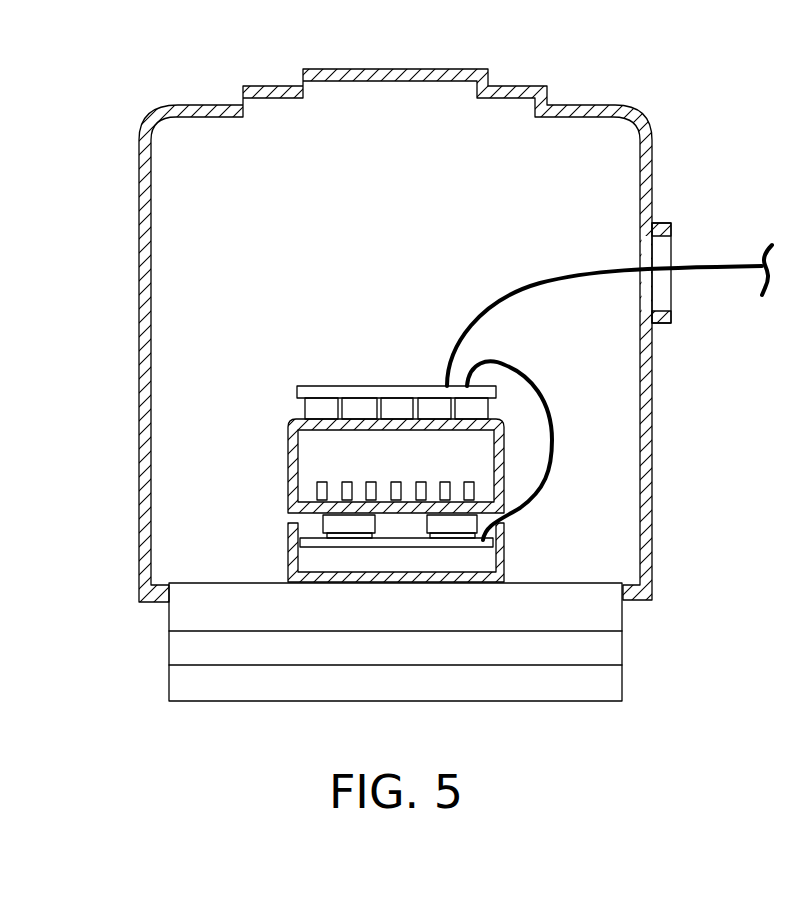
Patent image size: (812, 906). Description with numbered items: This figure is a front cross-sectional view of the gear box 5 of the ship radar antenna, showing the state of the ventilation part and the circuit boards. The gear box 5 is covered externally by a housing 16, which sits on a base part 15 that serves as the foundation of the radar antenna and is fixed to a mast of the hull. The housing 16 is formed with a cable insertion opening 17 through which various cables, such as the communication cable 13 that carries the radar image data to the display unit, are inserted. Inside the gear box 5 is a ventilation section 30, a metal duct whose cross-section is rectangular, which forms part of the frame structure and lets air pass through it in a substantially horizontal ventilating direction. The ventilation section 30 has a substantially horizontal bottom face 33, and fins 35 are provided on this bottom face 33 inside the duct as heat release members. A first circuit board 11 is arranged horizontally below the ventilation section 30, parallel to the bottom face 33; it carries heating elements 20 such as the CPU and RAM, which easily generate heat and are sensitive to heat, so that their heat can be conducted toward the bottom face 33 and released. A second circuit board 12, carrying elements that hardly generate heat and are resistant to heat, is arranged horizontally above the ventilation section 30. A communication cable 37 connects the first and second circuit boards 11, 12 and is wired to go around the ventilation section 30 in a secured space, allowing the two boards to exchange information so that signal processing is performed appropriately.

The gear box 5 is at (120, 262).
The housing 16 is at (146, 128).
The cable insertion opening 17 is at (658, 308).
The communication cable 13 is at (728, 262).
The second circuit board 12 is at (360, 386).
The ventilation section 30 is at (300, 461).
The fins 35 is at (349, 482).
The communication cable 37 is at (555, 452).
The bottom face 33 is at (300, 533).
The heating elements 20 is at (347, 534).
The first circuit board 11 is at (403, 548).
The base part 15 is at (610, 688).